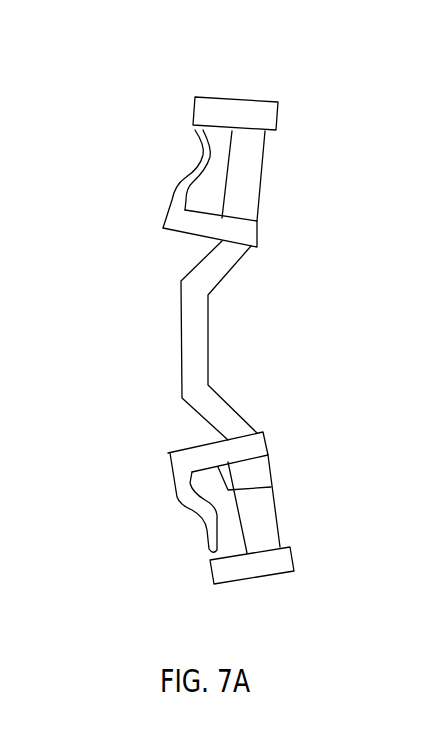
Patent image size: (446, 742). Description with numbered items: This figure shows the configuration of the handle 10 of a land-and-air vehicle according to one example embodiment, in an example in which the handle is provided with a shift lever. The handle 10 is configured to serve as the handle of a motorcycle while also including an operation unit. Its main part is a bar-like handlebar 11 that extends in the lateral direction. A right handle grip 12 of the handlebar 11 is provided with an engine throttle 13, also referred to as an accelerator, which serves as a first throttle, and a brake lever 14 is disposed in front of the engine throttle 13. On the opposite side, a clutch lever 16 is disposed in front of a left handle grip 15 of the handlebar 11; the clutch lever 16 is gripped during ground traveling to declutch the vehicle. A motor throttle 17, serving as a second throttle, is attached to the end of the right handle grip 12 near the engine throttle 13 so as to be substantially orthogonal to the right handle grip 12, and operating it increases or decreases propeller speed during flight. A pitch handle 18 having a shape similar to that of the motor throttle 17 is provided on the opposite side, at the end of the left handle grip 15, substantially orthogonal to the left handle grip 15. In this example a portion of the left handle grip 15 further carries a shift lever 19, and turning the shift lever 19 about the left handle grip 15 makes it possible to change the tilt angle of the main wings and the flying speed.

The handle 10 is at (126, 272).
The handlebar 11 is at (190, 326).
The right handle grip 12 is at (284, 186).
The engine throttle 13 is at (248, 166).
The brake lever 14 is at (187, 183).
The left handle grip 15 is at (259, 527).
The clutch lever 16 is at (202, 502).
The motor throttle 17 is at (221, 109).
The pitch handle 18 is at (241, 575).
The shift lever 19 is at (255, 473).